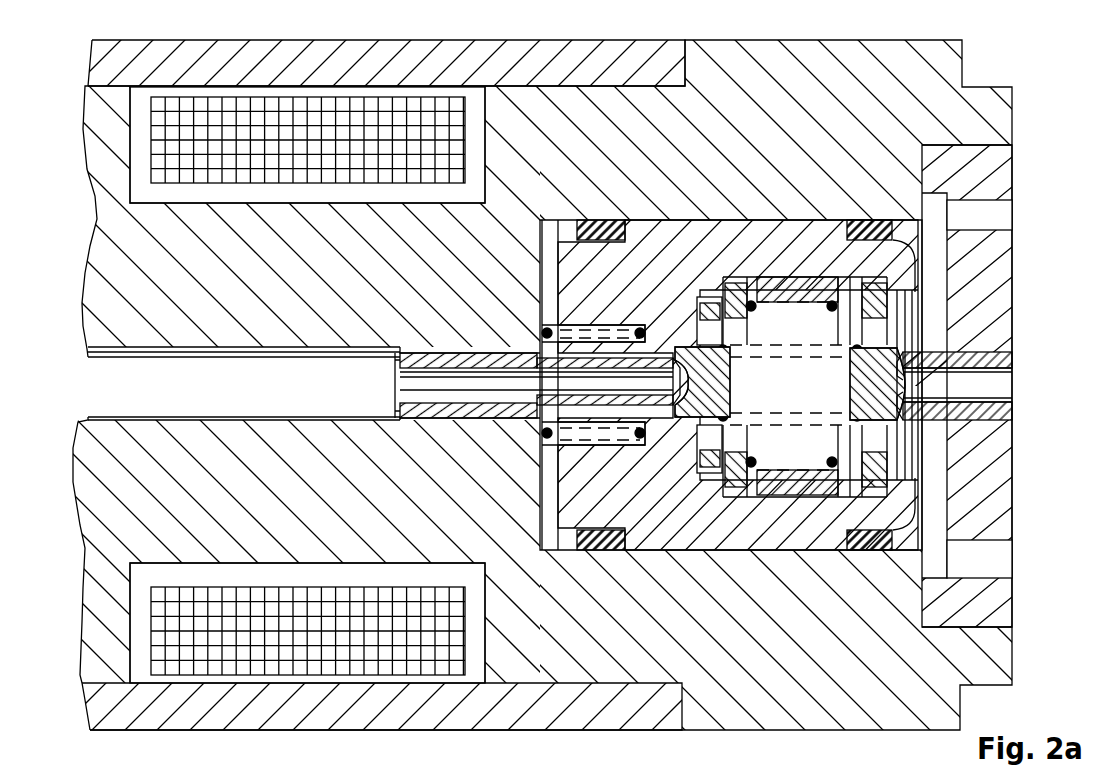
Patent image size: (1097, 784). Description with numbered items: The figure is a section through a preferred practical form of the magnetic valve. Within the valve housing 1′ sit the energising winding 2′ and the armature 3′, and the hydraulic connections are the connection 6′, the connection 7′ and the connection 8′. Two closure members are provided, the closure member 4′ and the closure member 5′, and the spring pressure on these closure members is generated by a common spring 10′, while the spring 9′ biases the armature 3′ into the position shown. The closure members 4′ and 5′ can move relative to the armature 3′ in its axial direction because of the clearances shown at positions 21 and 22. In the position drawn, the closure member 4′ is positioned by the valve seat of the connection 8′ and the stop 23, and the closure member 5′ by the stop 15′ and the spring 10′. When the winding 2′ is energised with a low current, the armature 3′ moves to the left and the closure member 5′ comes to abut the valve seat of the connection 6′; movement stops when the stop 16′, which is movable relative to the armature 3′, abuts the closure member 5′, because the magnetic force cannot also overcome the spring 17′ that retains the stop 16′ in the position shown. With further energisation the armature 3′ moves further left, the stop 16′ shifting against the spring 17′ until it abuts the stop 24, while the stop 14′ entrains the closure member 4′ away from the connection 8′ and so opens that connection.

The valve housing 1′ is at (794, 80).
The energising winding 2′ is at (306, 118).
The armature 3′ is at (700, 248).
The closure member 4′ is at (1004, 418).
The closure member 5′ is at (672, 426).
The connection 6′ is at (92, 402).
The connection 7′ is at (998, 210).
The connection 8′ is at (1000, 393).
The spring 9′ is at (562, 438).
The common spring 10′ is at (778, 470).
The stop 14′ is at (912, 470).
The stop 15′ is at (696, 470).
The stop 16′ is at (748, 522).
The spring 17′ is at (778, 262).
The clearance 21 is at (724, 294).
The clearance 22 is at (900, 297).
The stop 23 is at (856, 234).
The stop 24 is at (812, 520).